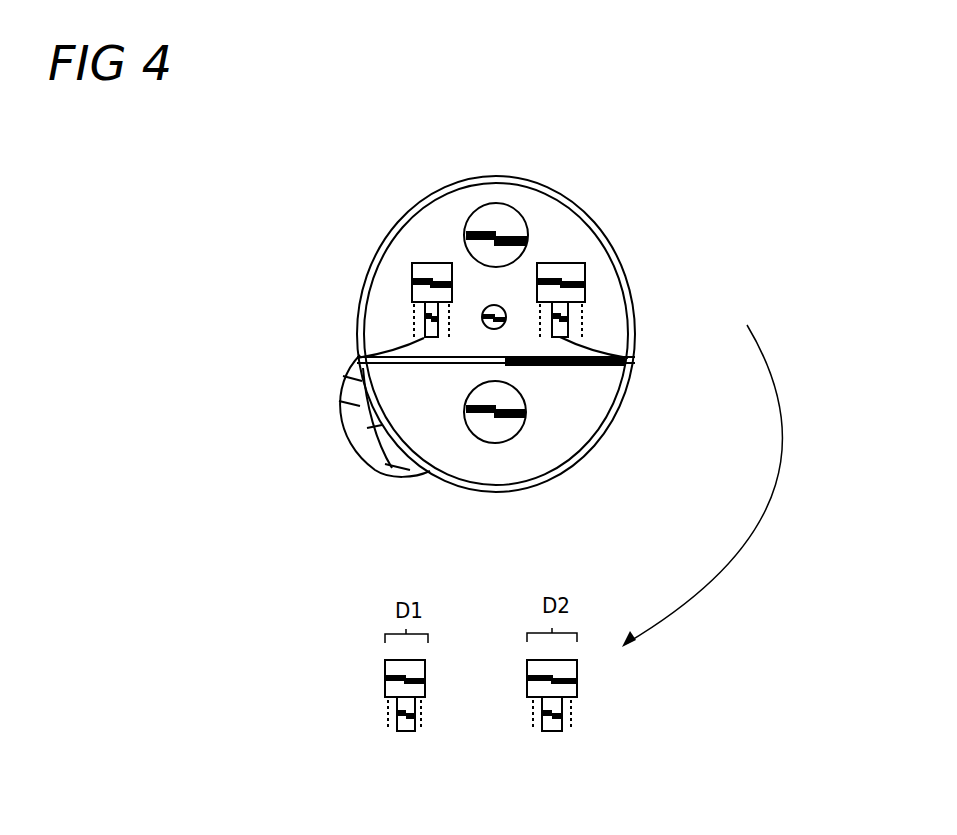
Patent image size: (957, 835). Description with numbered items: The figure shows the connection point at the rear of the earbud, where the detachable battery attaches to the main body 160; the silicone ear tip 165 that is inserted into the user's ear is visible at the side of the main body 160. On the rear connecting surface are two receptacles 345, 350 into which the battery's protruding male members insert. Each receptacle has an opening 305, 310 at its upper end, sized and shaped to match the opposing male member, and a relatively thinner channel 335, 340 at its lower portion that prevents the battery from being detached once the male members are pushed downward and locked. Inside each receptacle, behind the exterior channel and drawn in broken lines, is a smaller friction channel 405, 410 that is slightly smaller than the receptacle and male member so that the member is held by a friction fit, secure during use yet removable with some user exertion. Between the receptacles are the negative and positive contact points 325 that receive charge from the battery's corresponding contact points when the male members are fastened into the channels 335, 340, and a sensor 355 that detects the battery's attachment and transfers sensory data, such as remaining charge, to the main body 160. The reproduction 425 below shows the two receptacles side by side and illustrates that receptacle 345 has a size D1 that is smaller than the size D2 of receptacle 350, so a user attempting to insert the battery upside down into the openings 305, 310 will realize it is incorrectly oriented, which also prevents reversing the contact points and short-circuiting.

The main body 160 is at (575, 466).
The silicone ear tip 165 is at (350, 442).
The opening 305 is at (412, 272).
The opening 310 is at (585, 266).
The negative and positive contact points 325 is at (498, 218).
The channel 335 is at (365, 357).
The channel 340 is at (623, 358).
The receptacle 345 is at (369, 487).
The receptacle 350 is at (619, 486).
The sensor 355 is at (503, 328).
The friction channel 405 is at (413, 312).
The friction channel 410 is at (582, 307).
The reproduction 425 is at (783, 486).